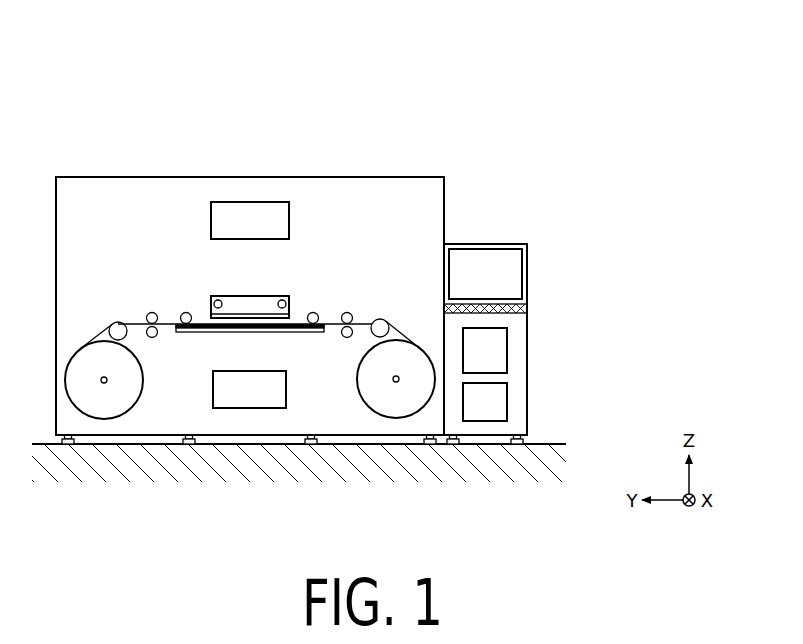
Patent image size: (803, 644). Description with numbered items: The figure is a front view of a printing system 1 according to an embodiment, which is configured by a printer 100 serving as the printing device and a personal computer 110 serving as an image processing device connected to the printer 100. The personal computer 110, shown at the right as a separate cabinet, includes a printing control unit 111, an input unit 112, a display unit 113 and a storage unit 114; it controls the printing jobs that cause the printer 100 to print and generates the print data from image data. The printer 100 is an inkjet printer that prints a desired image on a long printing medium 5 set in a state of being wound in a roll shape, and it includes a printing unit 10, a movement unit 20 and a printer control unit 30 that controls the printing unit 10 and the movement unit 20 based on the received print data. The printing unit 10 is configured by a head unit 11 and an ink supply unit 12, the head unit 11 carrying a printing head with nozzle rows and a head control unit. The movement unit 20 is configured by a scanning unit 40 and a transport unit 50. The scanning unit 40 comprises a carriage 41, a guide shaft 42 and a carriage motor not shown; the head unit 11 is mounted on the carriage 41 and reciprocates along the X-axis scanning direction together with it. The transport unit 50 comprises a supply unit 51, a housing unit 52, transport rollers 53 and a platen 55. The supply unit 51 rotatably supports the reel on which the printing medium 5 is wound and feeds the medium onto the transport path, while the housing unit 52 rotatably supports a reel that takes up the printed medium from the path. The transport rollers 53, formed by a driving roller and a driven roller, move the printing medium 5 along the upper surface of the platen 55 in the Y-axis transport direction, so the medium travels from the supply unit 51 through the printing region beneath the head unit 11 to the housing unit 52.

The printing system 1 is at (487, 110).
The printer 100 is at (87, 153).
The personal computer 110 is at (493, 230).
The printing control unit 111 is at (498, 352).
The input unit 112 is at (523, 307).
The display unit 113 is at (513, 270).
The storage unit 114 is at (498, 402).
The printer control unit 30 is at (289, 213).
The movement unit 20 is at (172, 193).
The scanning unit 40 is at (183, 242).
The transport unit 50 is at (137, 262).
The housing unit 52 is at (148, 400).
The supply unit 51 is at (352, 395).
The printing medium 5 is at (374, 322).
The transport rollers 53 is at (184, 313).
The printing unit 10 is at (305, 302).
The head unit 11 is at (255, 317).
The carriage 41 is at (244, 307).
The guide shaft 42 is at (218, 304).
The platen 55 is at (258, 333).
The ink supply unit 12 is at (219, 382).